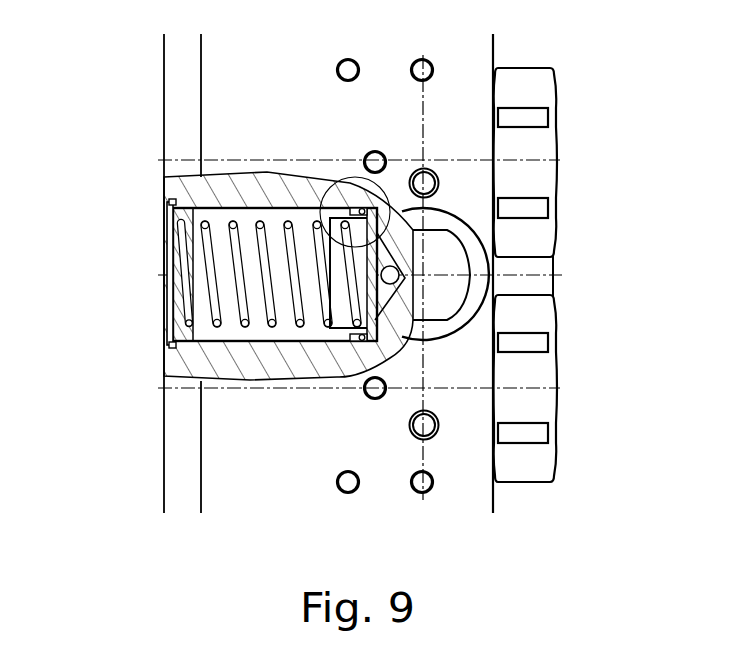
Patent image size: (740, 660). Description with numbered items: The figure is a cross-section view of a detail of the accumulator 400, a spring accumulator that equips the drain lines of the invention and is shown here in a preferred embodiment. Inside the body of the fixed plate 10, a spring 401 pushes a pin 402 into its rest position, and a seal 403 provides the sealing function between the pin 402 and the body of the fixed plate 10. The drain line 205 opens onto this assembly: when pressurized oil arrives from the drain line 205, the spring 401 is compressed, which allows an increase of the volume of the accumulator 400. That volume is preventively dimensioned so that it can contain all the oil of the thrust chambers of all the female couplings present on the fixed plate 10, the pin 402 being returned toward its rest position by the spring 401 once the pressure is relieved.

The fixed plate 10 is at (313, 357).
The drain line 205 is at (403, 279).
The accumulator 400 is at (152, 233).
The spring 401 is at (225, 208).
The pin 402 is at (333, 212).
The seal 403 is at (360, 207).